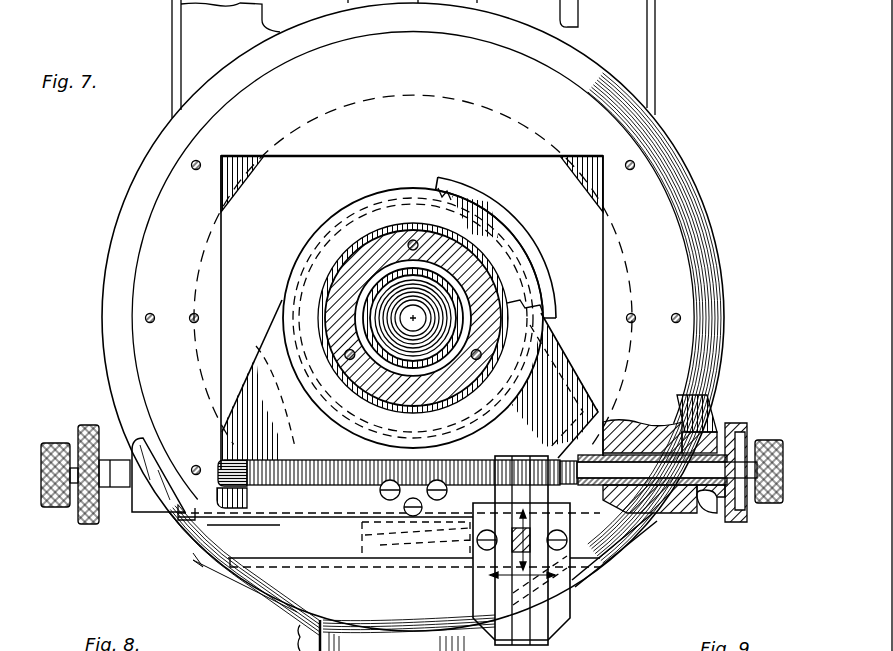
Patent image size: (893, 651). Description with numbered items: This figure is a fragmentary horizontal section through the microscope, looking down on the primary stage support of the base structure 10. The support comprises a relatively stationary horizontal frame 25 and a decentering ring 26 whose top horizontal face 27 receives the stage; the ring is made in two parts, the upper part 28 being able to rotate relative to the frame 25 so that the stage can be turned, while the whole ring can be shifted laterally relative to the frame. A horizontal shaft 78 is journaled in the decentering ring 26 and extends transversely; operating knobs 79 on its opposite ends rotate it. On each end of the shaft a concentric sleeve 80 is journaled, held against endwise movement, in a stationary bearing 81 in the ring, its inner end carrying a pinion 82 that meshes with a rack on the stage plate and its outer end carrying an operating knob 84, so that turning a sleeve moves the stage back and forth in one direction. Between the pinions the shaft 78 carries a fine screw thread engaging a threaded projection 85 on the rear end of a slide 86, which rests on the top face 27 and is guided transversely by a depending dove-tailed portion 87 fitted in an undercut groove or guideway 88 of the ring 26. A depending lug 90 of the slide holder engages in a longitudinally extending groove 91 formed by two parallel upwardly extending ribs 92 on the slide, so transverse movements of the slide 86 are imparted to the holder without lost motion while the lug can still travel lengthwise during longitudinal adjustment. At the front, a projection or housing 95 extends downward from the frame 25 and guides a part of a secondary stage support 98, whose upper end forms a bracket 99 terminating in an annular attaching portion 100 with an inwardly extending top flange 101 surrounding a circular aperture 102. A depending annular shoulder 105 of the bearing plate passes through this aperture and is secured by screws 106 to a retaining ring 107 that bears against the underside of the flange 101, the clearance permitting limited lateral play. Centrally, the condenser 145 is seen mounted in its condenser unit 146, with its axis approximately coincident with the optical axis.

The base structure 10 is at (433, 59).
The stationary horizontal frame 25 is at (234, 190).
The decentering ring 26 is at (700, 228).
The top horizontal face 27 is at (413, 266).
The upper ring part 28 is at (122, 208).
The horizontal shaft 78 is at (322, 460).
The operating knobs 79 is at (48, 443).
The sleeve 80 is at (110, 487).
The stationary bearing 81 is at (167, 510).
The pinion 82 is at (580, 447).
The operating knobs 84 is at (92, 520).
The threaded projection 85 is at (521, 462).
The slide 86 is at (482, 581).
The dove-tailed portion 87 is at (470, 545).
The undercut groove or guideway 88 is at (389, 523).
The depending lug 90 is at (630, 515).
The longitudinally extending groove 91 is at (556, 616).
The parallel upwardly extending ribs 92 is at (560, 597).
The projection or housing 95 is at (331, 577).
The secondary stage support 98 is at (556, 366).
The bracket 99 is at (614, 382).
The annular attaching portion 100 is at (516, 236).
The top flange 101 is at (517, 317).
The circular aperture 102 is at (352, 262).
The depending annular shoulder 105 is at (386, 238).
The screws 106 is at (457, 208).
The retaining ring 107 is at (488, 240).
The condenser 145 is at (400, 315).
The condenser unit 146 is at (494, 287).